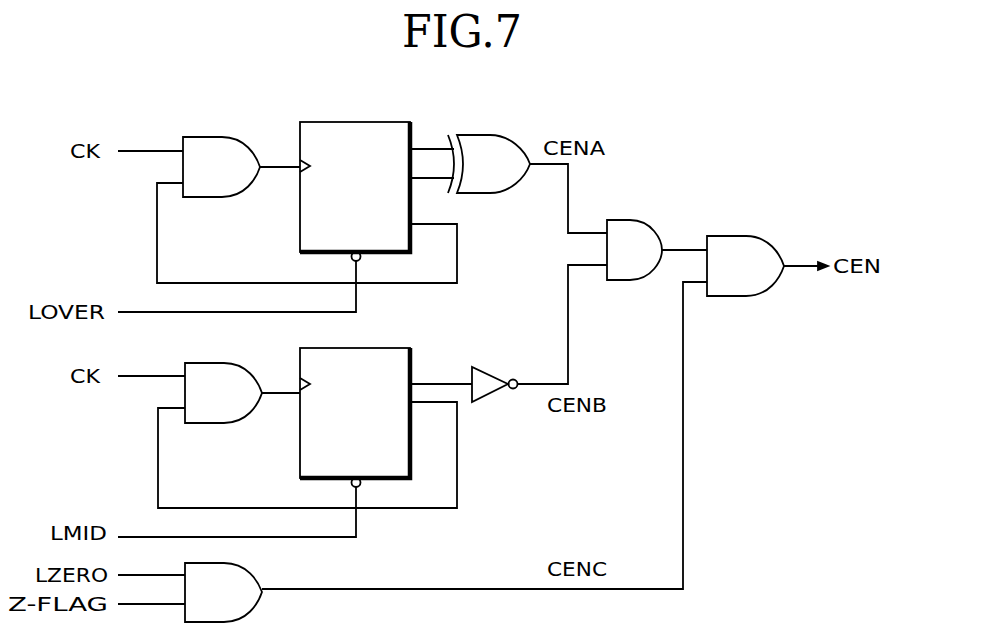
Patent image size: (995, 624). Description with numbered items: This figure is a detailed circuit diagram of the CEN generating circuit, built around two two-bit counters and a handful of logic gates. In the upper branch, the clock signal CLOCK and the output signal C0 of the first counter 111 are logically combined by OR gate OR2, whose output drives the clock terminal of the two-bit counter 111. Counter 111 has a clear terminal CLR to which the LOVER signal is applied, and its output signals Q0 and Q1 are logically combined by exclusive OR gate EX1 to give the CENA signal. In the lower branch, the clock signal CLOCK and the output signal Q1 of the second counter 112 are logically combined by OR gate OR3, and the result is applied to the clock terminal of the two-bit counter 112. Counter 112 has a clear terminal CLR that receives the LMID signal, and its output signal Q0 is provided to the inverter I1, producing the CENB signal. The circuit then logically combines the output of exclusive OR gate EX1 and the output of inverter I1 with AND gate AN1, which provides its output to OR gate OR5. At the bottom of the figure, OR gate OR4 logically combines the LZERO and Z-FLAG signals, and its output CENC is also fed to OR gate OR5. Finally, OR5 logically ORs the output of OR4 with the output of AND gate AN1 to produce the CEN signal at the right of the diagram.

The 2-bit counter 111 is at (352, 122).
The 2-bit counter 112 is at (411, 350).
The OR gate OR2 is at (221, 167).
The OR gate OR3 is at (223, 393).
The OR gate OR4 is at (223, 592).
The exclusive OR gate EX1 is at (489, 164).
The inverter I1 is at (495, 377).
The AND gate AN1 is at (634, 250).
The OR gate OR5 is at (745, 266).